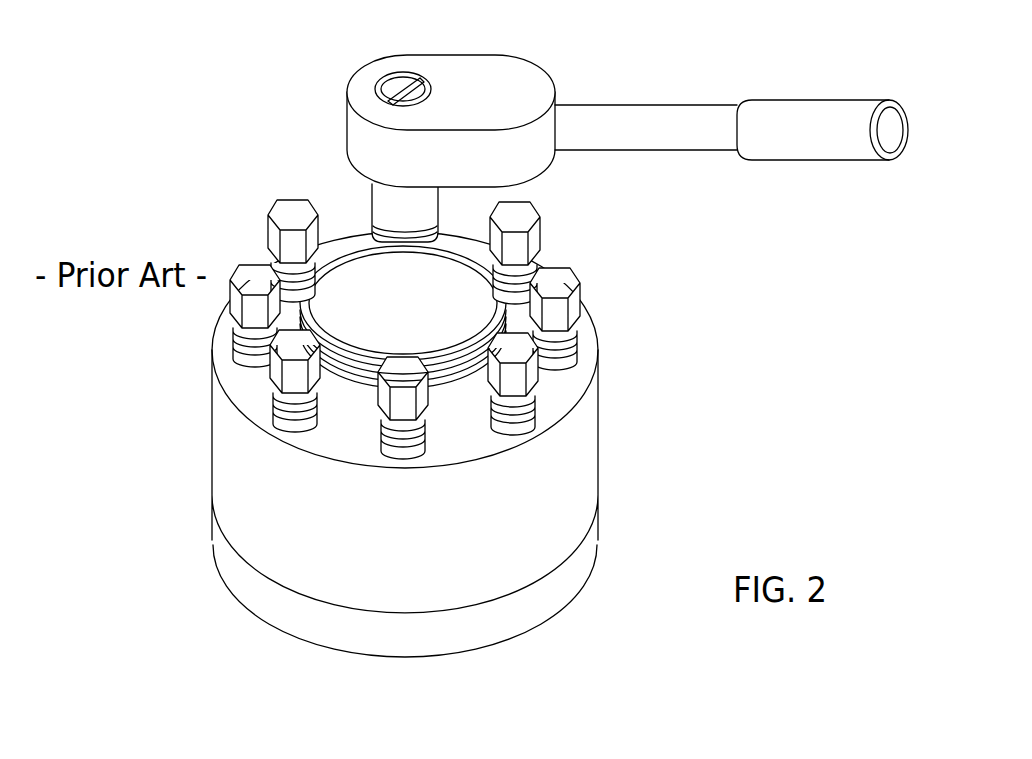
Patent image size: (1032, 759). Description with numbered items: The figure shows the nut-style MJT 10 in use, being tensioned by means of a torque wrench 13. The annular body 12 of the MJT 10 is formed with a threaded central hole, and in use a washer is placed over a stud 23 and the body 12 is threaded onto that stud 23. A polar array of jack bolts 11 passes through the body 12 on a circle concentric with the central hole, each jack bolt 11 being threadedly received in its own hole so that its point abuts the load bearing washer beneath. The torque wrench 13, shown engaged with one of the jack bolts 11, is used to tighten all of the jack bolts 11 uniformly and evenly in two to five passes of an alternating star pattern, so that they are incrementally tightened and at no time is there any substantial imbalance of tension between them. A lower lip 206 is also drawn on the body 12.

The nut-style MJT 10 is at (512, 356).
The jack bolts 11 is at (552, 280).
The annular body 12 is at (558, 473).
The torque wrench 13 is at (807, 120).
The stud 23 is at (377, 287).
The bottom lip 206 is at (557, 590).